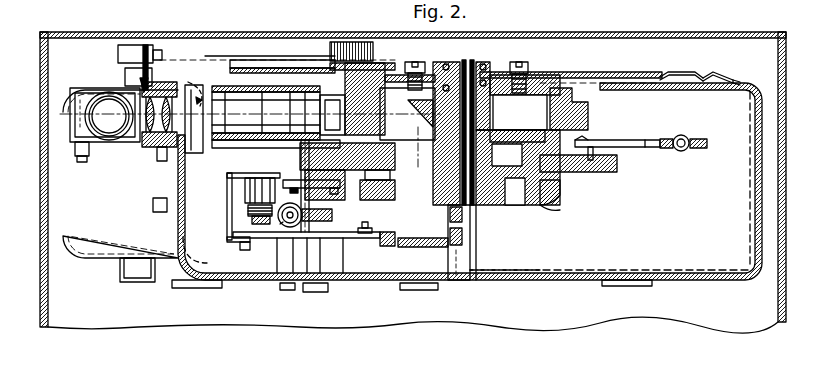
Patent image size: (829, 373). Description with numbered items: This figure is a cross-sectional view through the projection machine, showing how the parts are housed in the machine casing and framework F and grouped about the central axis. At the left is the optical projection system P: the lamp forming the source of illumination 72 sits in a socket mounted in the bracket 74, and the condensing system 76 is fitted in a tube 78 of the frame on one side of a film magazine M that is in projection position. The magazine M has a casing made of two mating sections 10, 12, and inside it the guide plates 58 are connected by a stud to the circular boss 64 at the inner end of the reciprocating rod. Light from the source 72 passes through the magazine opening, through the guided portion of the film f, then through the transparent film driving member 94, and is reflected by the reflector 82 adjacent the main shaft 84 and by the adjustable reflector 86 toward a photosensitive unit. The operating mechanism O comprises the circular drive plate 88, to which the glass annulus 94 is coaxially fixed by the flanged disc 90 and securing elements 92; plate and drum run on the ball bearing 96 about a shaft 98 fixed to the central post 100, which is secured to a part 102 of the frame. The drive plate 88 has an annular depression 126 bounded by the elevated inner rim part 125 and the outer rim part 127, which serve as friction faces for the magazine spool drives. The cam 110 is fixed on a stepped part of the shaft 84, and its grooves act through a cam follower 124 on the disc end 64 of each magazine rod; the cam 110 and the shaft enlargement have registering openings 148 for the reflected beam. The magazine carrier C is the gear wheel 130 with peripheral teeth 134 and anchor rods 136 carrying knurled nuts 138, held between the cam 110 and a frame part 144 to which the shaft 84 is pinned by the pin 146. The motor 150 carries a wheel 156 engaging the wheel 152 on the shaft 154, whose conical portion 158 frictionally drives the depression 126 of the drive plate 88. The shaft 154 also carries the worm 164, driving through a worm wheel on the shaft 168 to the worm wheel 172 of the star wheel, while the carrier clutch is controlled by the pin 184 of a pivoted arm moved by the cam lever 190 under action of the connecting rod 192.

The magazine casing section 10 is at (183, 98).
The magazine casing section 12 is at (200, 149).
The guide plate 58 is at (325, 107).
The circular boss 64 is at (312, 212).
The source of illumination 72 is at (102, 103).
The bracket 74 is at (132, 135).
The condensing system 76 is at (157, 127).
The tube 78 is at (162, 162).
The reflector 82 is at (428, 100).
The main shaft 84 is at (497, 113).
The adjustable reflector 86 is at (418, 247).
The drive plate 88 is at (593, 74).
The flanged disc 90 is at (540, 74).
The securing elements 92 is at (413, 67).
The film driving member 94 is at (357, 160).
The ball bearing 96 is at (498, 78).
The shaft 98 is at (473, 77).
The central post 100 is at (475, 227).
The frame part 102 is at (470, 207).
The cam 110 is at (588, 115).
The cam follower 124 is at (590, 147).
The inner rim part 125 is at (665, 73).
The annular depression 126 is at (708, 74).
The outer rim part 127 is at (726, 77).
The gear wheel 130 is at (548, 192).
The peripheral teeth 134 is at (618, 164).
The anchor rod 136 is at (646, 140).
The knurled nut 138 is at (687, 136).
The frame part 144 is at (575, 218).
The pin 146 is at (512, 202).
The registering openings 148 is at (425, 198).
The motor 150 is at (98, 250).
The wheel 152 is at (270, 60).
The shaft 154 is at (258, 192).
The motor wheel 156 is at (133, 47).
The conical portion 158 is at (222, 57).
The worm 164 is at (246, 244).
The shaft 168 is at (282, 226).
The worm wheel 172 is at (333, 215).
The pin 184 is at (278, 186).
The cam lever 190 is at (343, 250).
The connecting rod 192 is at (368, 245).
The magazine carrier C is at (583, 137).
The machine casing and framework F is at (537, 263).
The film magazine M is at (199, 100).
The operating mechanism O is at (377, 72).
The optical projection system P is at (145, 78).
The film f is at (283, 88).